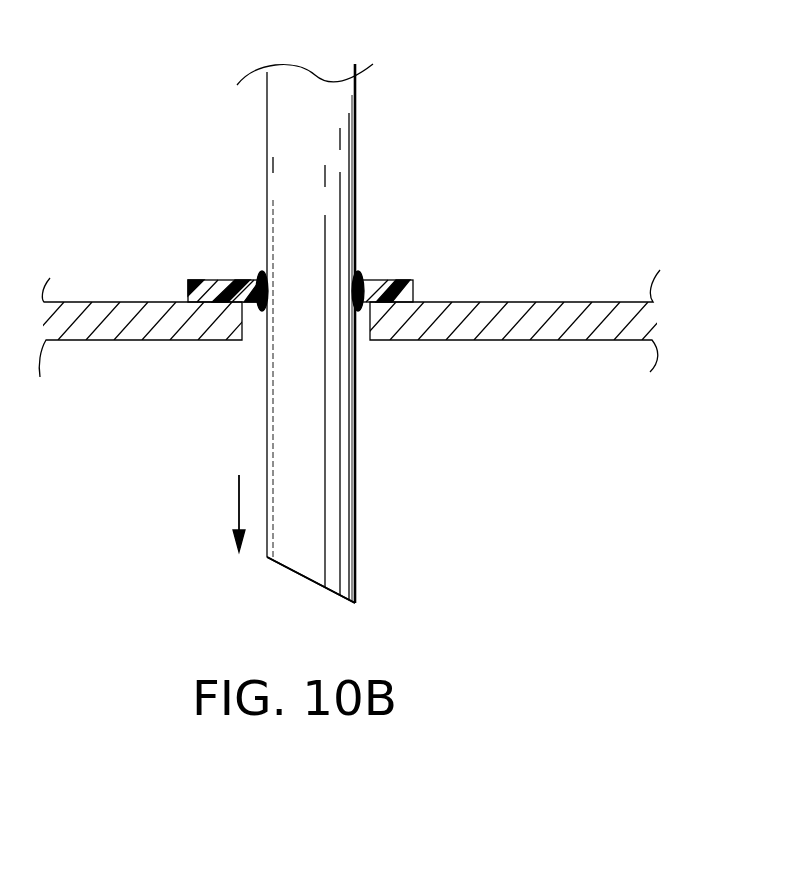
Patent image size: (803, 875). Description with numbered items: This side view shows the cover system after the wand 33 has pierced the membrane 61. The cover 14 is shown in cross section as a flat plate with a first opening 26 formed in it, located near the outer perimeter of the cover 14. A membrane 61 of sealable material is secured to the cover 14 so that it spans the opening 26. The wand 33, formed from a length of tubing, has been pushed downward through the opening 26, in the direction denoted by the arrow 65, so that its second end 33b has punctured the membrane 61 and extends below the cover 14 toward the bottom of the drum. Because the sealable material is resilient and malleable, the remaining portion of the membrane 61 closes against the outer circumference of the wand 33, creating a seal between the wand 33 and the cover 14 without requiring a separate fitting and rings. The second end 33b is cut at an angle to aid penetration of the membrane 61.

The cover 14 is at (142, 302).
The first opening 26 is at (258, 318).
The wand 33 is at (371, 190).
The second end of the wand 33b is at (297, 578).
The membrane 61 is at (242, 280).
The arrows 65 is at (237, 505).